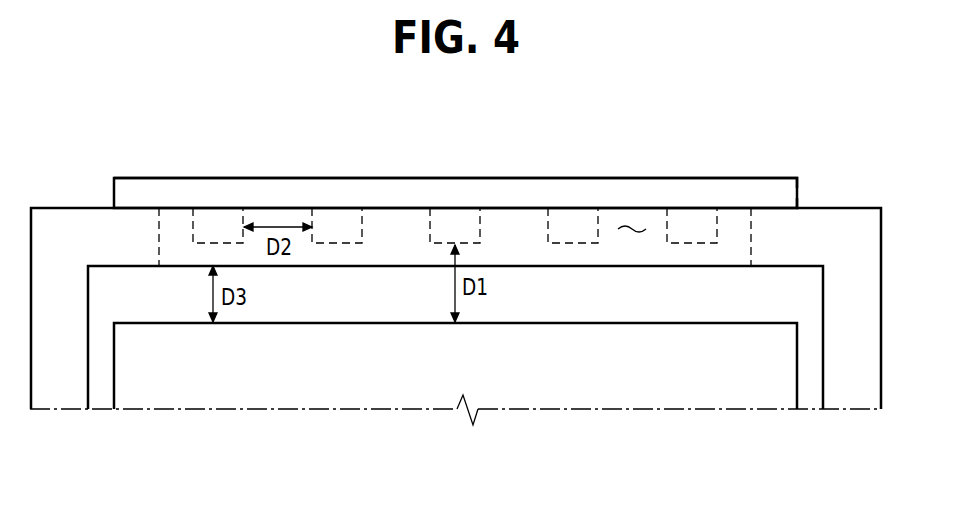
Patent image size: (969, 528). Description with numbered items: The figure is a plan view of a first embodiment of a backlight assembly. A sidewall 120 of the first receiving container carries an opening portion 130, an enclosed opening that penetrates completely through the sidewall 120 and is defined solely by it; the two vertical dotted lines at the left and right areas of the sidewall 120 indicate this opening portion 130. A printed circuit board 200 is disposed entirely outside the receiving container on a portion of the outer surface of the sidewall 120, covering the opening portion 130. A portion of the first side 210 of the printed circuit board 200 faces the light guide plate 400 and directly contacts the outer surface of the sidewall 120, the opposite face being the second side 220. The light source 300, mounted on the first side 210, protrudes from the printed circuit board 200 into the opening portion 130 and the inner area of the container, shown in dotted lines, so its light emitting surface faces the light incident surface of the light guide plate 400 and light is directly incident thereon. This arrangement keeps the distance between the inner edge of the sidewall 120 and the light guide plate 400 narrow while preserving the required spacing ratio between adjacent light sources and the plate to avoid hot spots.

The sidewall 120 is at (837, 240).
The opening portion 130 is at (630, 227).
The printed circuit board 200 is at (397, 197).
The first side 210 is at (500, 208).
The upper surface of cover plate 220 is at (568, 180).
The light source 300 is at (222, 228).
The light guide plate 400 is at (369, 377).